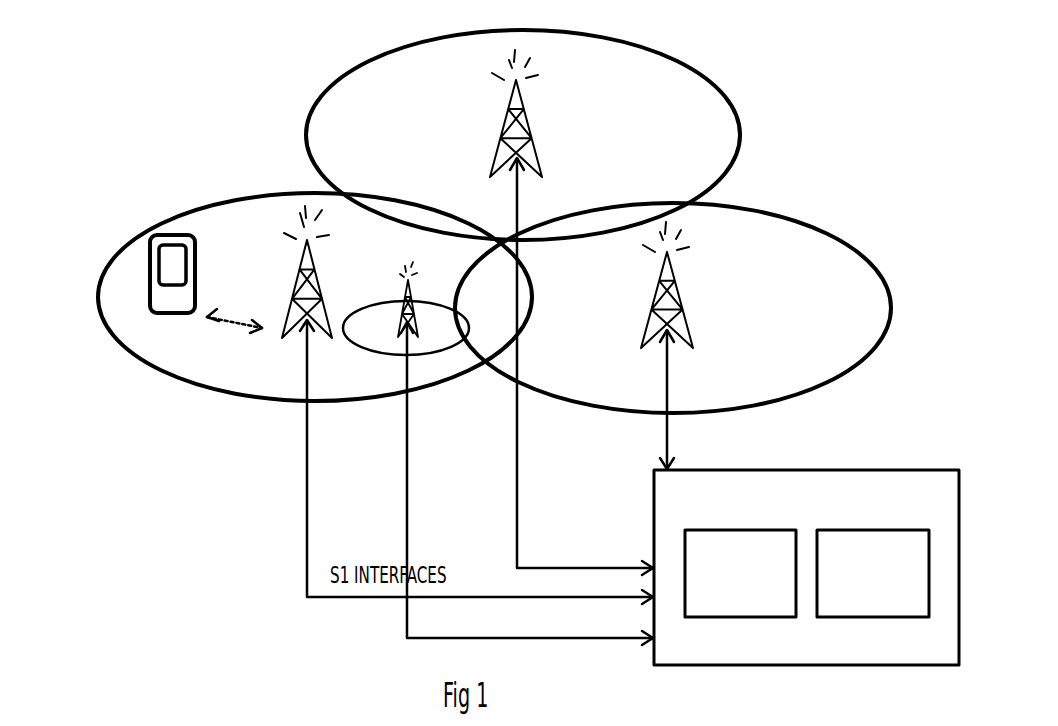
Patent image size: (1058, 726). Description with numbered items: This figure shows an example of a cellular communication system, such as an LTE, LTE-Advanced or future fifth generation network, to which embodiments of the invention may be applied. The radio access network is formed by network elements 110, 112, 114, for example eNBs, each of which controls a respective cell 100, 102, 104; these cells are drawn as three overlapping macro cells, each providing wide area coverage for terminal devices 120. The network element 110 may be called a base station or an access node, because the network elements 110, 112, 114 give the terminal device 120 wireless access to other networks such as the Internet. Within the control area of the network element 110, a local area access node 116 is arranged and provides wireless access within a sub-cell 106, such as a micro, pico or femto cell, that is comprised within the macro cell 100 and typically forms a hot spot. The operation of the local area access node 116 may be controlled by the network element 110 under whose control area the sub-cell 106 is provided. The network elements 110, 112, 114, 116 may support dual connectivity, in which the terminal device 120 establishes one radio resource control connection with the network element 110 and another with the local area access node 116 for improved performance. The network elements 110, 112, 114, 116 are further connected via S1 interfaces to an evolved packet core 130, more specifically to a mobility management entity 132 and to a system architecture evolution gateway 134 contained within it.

The cell 100 is at (253, 193).
The cell 102 is at (703, 85).
The cell 104 is at (853, 257).
The sub-cell 106 is at (362, 307).
The network element 110 is at (301, 276).
The network element 112 is at (508, 112).
The network element 114 is at (657, 290).
The local area access node 116 is at (407, 279).
The terminal device 120 is at (148, 263).
The evolved packet core 130 is at (806, 567).
The mobility management entity 132 is at (740, 573).
The system architecture evolution gateway 134 is at (873, 573).